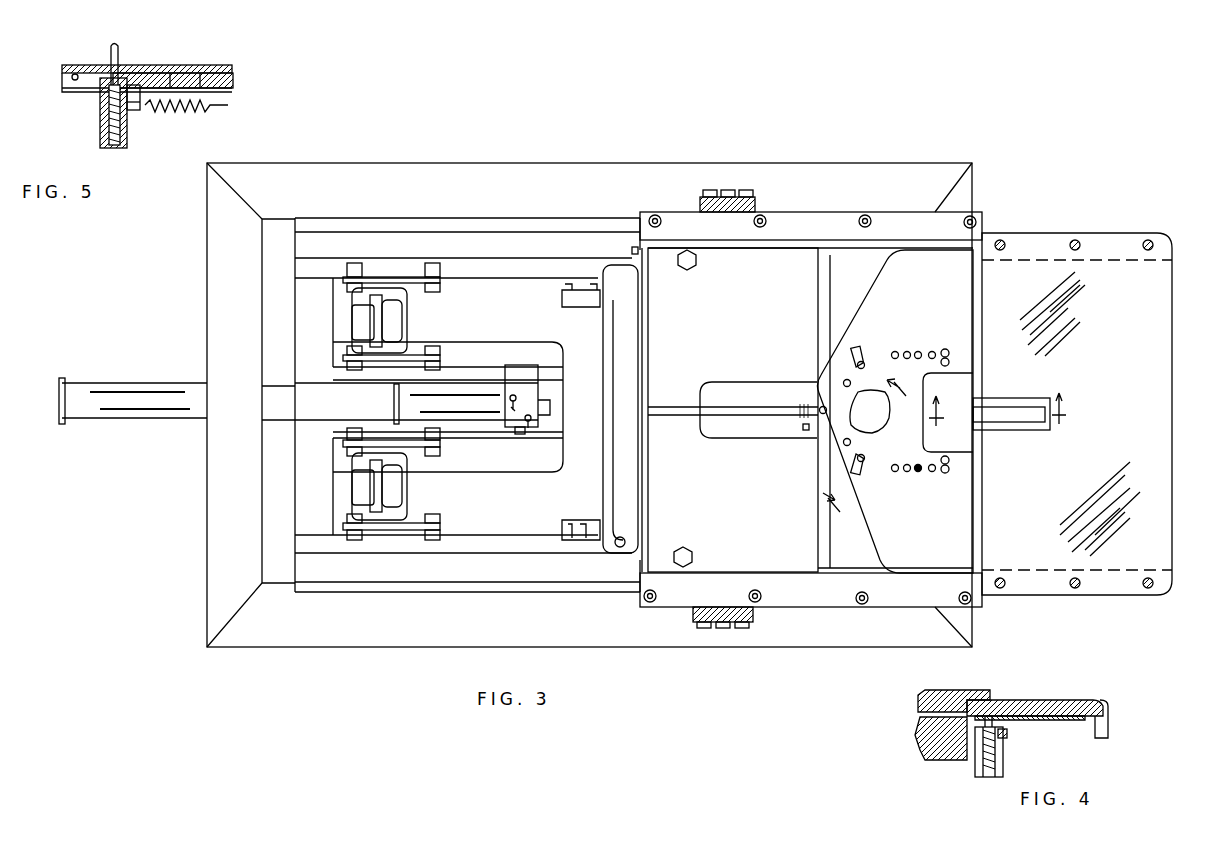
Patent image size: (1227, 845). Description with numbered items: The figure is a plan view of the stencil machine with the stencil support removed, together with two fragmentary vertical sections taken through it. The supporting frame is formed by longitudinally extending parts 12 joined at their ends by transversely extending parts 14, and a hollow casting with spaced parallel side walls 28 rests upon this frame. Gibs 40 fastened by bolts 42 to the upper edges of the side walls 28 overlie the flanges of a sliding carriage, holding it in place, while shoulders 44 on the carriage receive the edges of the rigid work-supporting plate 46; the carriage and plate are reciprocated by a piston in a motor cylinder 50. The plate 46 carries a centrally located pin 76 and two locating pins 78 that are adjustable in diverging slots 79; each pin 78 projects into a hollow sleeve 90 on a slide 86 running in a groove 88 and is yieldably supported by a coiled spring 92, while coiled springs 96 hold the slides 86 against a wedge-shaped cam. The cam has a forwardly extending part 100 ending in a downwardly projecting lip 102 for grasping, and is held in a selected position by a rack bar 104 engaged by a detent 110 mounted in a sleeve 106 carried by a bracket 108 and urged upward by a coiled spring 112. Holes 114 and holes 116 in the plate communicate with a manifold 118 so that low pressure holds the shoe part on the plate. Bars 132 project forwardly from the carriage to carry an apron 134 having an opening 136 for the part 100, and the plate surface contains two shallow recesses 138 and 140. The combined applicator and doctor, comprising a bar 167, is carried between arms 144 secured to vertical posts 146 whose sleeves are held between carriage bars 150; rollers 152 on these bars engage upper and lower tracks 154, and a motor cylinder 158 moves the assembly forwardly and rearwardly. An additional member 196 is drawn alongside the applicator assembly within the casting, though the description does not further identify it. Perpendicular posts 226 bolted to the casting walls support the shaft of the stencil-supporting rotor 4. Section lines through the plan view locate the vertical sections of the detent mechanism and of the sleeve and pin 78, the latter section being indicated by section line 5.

In FIG. 3, the longitudinally extending parts 12 is at (478, 165).
In FIG. 3, the transversely extending parts 14 is at (218, 490).
In FIG. 3, the side walls 28 is at (537, 217).
In FIG. 3, the gibs 40 is at (815, 217).
In FIG. 3, the bolts 42 is at (656, 215).
In FIG. 3, the shoulders 44 is at (855, 572).
In FIG. 3, the work-supporting plate 46 is at (928, 555).
In FIG. 3, the motor cylinder 50 is at (408, 398).
In FIG. 3, the centrally located pin 76 is at (816, 384).
In FIG. 3, the locating pins 78 is at (864, 353).
In FIG. 5, the locating pins 78 is at (118, 45).
In FIG. 3, the slots 79 is at (854, 347).
In FIG. 5, the slides 86 is at (183, 78).
In FIG. 5, the grooves 88 is at (70, 70).
In FIG. 5, the hollow sleeve 90 is at (100, 110).
In FIG. 5, the coiled spring 92 is at (130, 105).
In FIG. 5, the coiled springs 96 is at (182, 115).
In FIG. 4, the forwardly extending part 100 is at (1002, 703).
In FIG. 4, the downwardly projecting lip 102 is at (1108, 734).
In FIG. 4, the rack bar 104 is at (1055, 708).
In FIG. 4, the sleeve 106 is at (1000, 758).
In FIG. 4, the bracket 108 is at (1010, 735).
In FIG. 4, the detent 110 is at (1000, 719).
In FIG. 4, the coiled spring 112 is at (982, 758).
In FIG. 3, the holes 114 is at (912, 353).
In FIG. 3, the holes 116 is at (845, 381).
In FIG. 4, the manifold 118 is at (918, 738).
In FIG. 3, the bars 132 is at (1128, 262).
In FIG. 3, the apron 134 is at (1150, 483).
In FIG. 3, the opening 136 is at (1030, 405).
In FIG. 3, the recess 138 is at (975, 393).
In FIG. 3, the recess 140 is at (882, 430).
In FIG. 3, the arms 144 is at (470, 312).
In FIG. 3, the posts 146 is at (385, 492).
In FIG. 3, the carriage bars 150 is at (436, 452).
In FIG. 3, the rollers 152 is at (345, 440).
In FIG. 3, the tracks 154 is at (438, 272).
In FIG. 3, the motor cylinder 158 is at (108, 385).
In FIG. 3, the bar 167 is at (598, 421).
In FIG. 3, the bracket 196 is at (602, 268).
In FIG. 3, the posts 226 is at (703, 190).
In FIG. 3, the stencil-supporting rotor 4 is at (998, 416).
In FIG. 3, the section line 5 is at (869, 448).